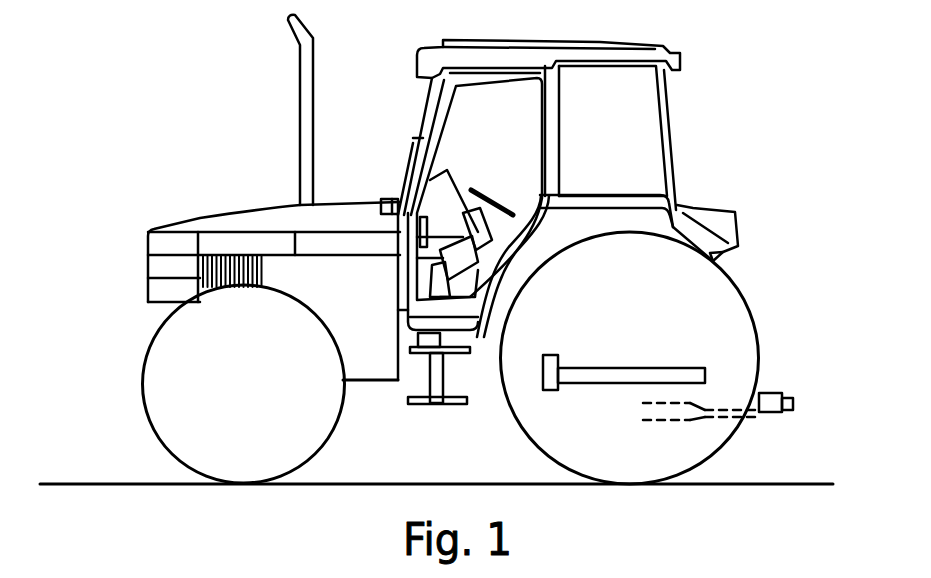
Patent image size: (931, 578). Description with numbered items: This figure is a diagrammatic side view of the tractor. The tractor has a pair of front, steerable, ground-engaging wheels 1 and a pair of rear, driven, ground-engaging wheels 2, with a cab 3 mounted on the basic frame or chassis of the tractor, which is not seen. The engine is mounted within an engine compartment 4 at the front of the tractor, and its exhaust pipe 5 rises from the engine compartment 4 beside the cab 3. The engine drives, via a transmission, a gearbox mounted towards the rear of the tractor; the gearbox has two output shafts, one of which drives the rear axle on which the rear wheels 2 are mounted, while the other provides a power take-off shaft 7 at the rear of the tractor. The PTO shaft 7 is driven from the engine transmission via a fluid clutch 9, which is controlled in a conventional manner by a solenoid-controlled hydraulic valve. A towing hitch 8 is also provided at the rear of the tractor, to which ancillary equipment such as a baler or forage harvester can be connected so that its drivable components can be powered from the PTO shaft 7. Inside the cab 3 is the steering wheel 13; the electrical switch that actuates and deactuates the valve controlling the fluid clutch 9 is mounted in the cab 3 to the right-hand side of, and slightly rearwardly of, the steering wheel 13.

The front steerable ground-engaging wheels 1 is at (168, 412).
The rear driven ground-engaging wheels 2 is at (532, 433).
The cab 3 is at (510, 60).
The engine compartment 4 is at (359, 302).
The exhaust pipe 5 is at (300, 93).
The power take-off shaft 7 is at (620, 367).
The towing hitch 8 is at (767, 403).
The fluid clutch 9 is at (543, 375).
The steering wheel 13 is at (471, 190).